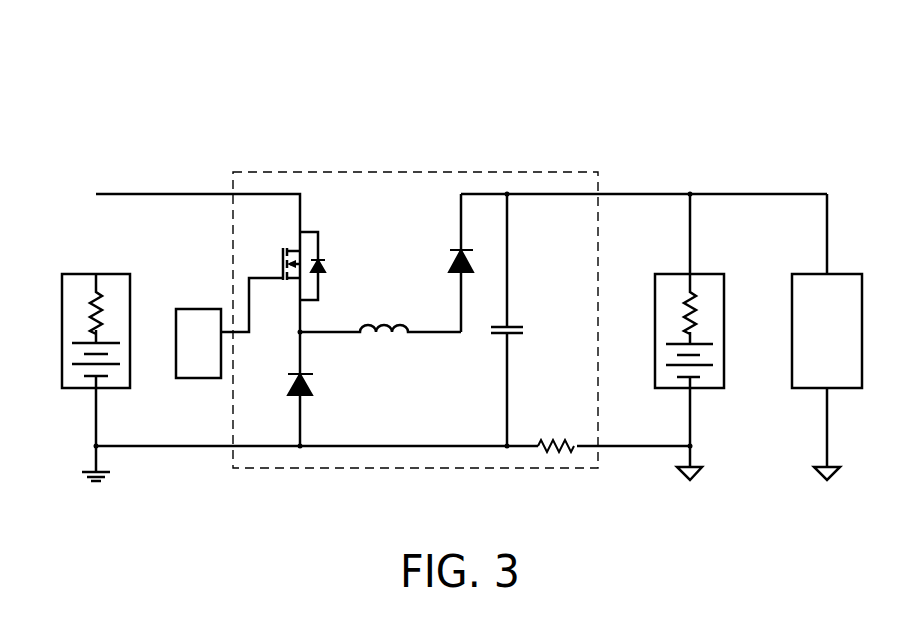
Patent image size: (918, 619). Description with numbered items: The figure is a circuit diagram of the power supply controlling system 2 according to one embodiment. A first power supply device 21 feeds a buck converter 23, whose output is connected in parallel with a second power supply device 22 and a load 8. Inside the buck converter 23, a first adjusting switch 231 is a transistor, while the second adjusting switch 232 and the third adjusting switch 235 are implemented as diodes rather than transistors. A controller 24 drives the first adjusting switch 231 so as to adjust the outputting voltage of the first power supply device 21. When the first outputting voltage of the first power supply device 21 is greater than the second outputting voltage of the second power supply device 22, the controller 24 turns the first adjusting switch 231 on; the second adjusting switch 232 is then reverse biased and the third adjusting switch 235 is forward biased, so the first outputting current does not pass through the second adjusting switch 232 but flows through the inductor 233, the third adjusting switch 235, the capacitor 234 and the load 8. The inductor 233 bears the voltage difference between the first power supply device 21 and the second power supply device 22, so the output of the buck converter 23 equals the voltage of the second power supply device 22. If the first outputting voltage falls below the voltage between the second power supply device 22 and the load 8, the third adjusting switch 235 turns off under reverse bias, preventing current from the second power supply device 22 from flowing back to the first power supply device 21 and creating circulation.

The power supply controlling system 2 is at (462, 62).
The load 8 is at (808, 274).
The first power supply device 21 is at (116, 274).
The second power supply device 22 is at (706, 274).
The buck converter 23 is at (390, 172).
The controller 24 is at (203, 309).
The first adjusting switch 231 is at (336, 240).
The second adjusting switch 232 is at (328, 383).
The inductor 233 is at (384, 314).
The capacitor 234 is at (529, 318).
The third adjusting switch 235 is at (444, 242).